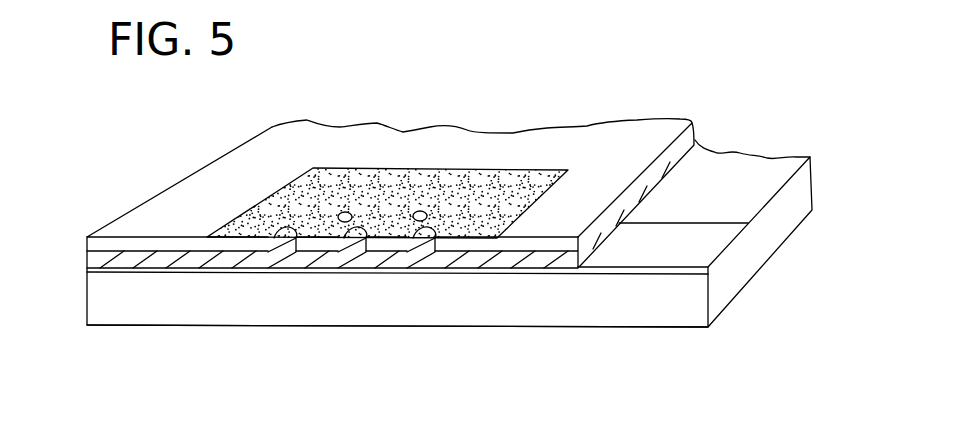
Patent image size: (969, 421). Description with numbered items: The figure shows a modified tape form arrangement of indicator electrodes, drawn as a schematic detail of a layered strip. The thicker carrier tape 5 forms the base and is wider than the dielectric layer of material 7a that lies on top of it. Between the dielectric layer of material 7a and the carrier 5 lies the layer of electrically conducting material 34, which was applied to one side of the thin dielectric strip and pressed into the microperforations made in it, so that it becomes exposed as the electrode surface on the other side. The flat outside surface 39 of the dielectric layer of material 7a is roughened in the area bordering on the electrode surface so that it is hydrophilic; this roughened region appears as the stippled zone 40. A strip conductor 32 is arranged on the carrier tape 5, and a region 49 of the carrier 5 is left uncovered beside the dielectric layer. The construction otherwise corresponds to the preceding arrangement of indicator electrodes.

The carrier tape 5 is at (795, 196).
The dielectric layer of material 7a is at (697, 140).
The strip conductor 32 is at (488, 271).
The electrically conducting material 34 is at (127, 260).
The outside surface 39 is at (642, 147).
The stippled electrode region 40 is at (540, 172).
The contact pad region 49 is at (698, 249).